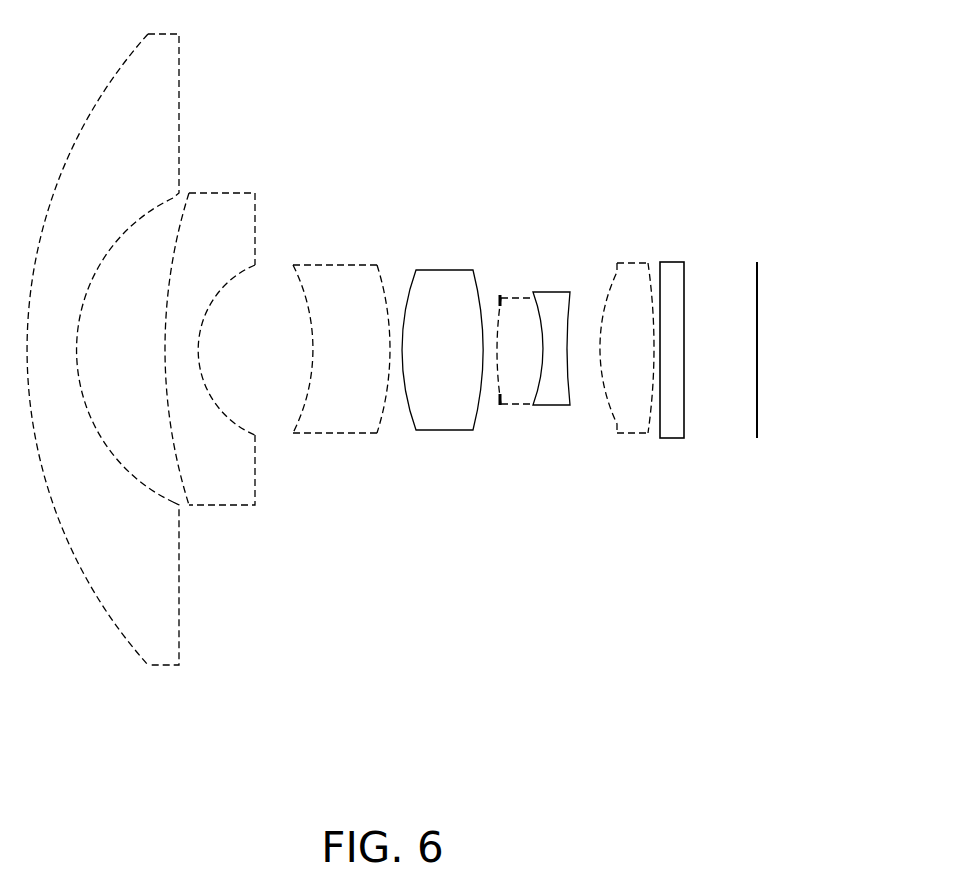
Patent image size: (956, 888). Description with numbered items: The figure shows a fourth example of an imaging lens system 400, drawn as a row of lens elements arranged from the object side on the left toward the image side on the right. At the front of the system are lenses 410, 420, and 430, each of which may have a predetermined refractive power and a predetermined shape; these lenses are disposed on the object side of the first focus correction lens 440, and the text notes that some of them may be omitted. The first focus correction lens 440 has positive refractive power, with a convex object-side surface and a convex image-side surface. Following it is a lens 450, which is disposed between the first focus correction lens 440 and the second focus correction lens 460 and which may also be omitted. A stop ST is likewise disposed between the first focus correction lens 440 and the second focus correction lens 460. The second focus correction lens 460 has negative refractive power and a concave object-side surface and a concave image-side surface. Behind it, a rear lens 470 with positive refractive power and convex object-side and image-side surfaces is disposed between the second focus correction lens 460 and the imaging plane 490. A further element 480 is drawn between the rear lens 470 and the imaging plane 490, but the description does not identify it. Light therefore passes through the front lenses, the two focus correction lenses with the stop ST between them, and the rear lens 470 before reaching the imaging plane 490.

The imaging lens system 400 is at (441, 100).
The lens 410 is at (163, 657).
The lens 420 is at (228, 493).
The lens 430 is at (337, 430).
The first focus correction lens 440 is at (446, 425).
The lens 450 is at (516, 409).
The second focus correction lens 460 is at (548, 405).
The rear lens 470 is at (632, 428).
The filter 480 is at (672, 437).
The imaging plane 490 is at (757, 430).
The stop ST is at (500, 296).